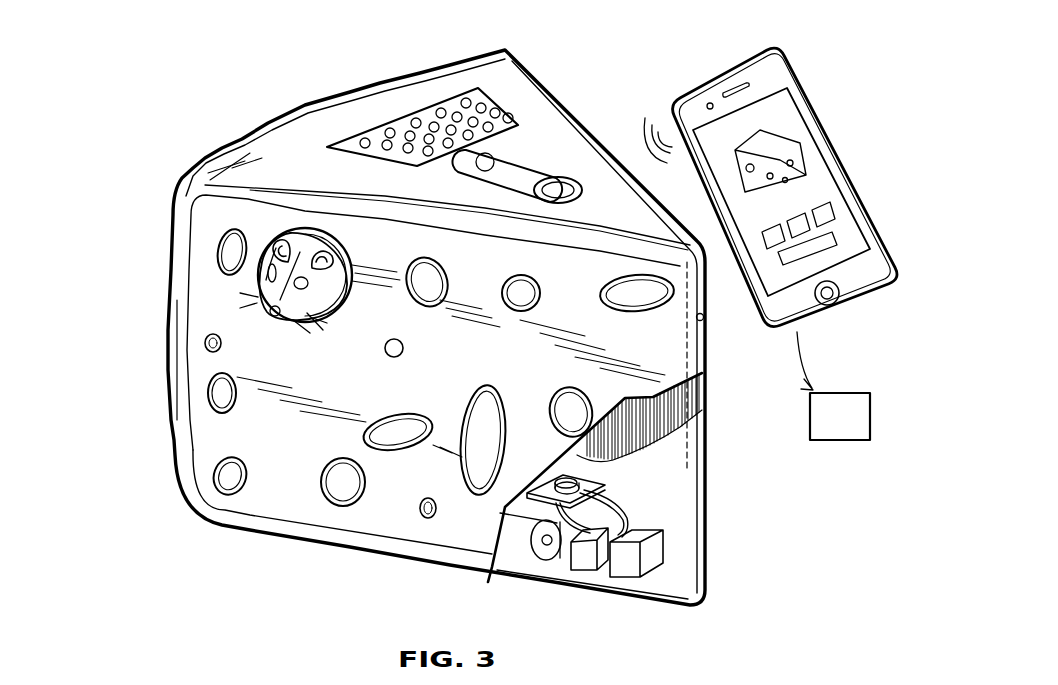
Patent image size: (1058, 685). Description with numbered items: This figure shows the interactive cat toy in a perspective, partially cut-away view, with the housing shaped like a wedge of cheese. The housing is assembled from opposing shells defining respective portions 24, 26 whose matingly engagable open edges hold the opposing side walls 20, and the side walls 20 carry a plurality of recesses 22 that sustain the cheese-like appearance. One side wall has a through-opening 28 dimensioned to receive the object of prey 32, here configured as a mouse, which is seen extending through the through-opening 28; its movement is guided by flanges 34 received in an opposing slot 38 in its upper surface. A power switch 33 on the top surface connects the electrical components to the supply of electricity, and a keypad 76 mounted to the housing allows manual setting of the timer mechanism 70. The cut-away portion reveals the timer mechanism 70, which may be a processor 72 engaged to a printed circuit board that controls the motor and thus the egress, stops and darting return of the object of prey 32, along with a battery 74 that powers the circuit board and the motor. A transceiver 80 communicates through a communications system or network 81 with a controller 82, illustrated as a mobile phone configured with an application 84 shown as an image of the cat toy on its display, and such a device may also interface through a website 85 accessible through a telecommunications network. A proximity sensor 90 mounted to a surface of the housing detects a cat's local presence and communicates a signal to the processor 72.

The side walls 20 is at (283, 503).
The recesses 22 is at (463, 442).
The portion 24 is at (172, 461).
The portion 26 is at (181, 277).
The through-opening 28 is at (308, 232).
The object of prey 32 is at (245, 297).
The power switch 33 is at (553, 182).
The flanges 34 is at (305, 230).
The opposing slot 38 is at (262, 230).
The timer mechanism 70 is at (653, 563).
The processor 72 is at (577, 478).
The battery 74 is at (555, 548).
The keypad 76 is at (393, 117).
The transceiver 80 is at (583, 557).
The communications system or network 81 is at (642, 130).
The controller 82 is at (698, 84).
The application 84 is at (793, 157).
The website 85 is at (847, 403).
The proximity sensor 90 is at (704, 320).